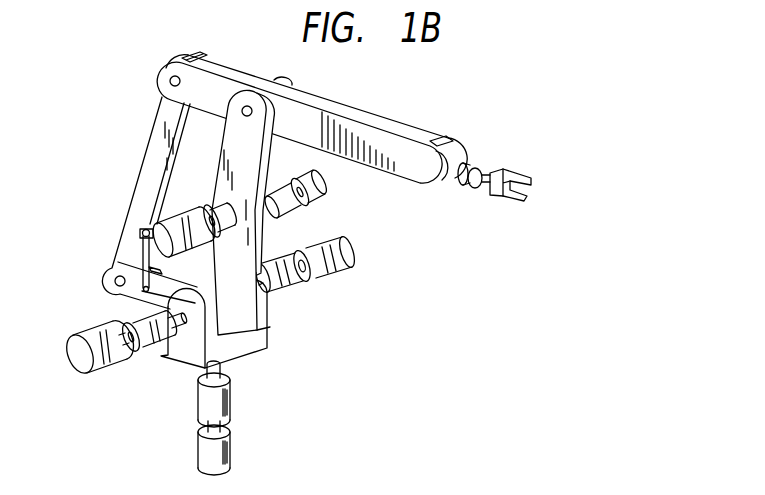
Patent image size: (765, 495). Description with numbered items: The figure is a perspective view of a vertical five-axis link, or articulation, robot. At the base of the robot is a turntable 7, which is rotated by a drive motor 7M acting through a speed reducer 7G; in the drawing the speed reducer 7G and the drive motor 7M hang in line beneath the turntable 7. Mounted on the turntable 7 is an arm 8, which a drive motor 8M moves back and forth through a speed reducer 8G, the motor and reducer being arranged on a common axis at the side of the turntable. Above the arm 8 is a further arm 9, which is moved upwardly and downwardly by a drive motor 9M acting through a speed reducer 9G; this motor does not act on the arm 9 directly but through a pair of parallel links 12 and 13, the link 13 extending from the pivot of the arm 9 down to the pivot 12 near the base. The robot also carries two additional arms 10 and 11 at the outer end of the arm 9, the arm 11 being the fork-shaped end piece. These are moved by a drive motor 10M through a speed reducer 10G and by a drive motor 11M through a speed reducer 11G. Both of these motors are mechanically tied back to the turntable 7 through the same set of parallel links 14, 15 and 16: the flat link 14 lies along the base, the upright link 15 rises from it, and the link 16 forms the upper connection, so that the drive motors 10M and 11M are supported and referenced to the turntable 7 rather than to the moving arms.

The turntable 7 is at (258, 338).
The speed reducer 7G is at (226, 403).
The drive motor 7M is at (226, 449).
The arm 8 is at (238, 293).
The speed reducer 8G is at (156, 350).
The drive motor 8M is at (110, 366).
The arm 9 is at (352, 110).
The speed reducer 9G is at (290, 282).
The drive motor 9M is at (342, 262).
The arm 10 is at (465, 186).
The speed reducer 10G is at (208, 217).
The drive motor 10M is at (163, 232).
The arm 11 is at (477, 170).
The speed reducer 11G is at (290, 214).
The drive motor 11M is at (325, 185).
The parallel link 12 is at (109, 287).
The parallel link 13 is at (160, 117).
The parallel link 14 is at (138, 301).
The parallel link 15 is at (144, 258).
The parallel link 16 is at (150, 233).